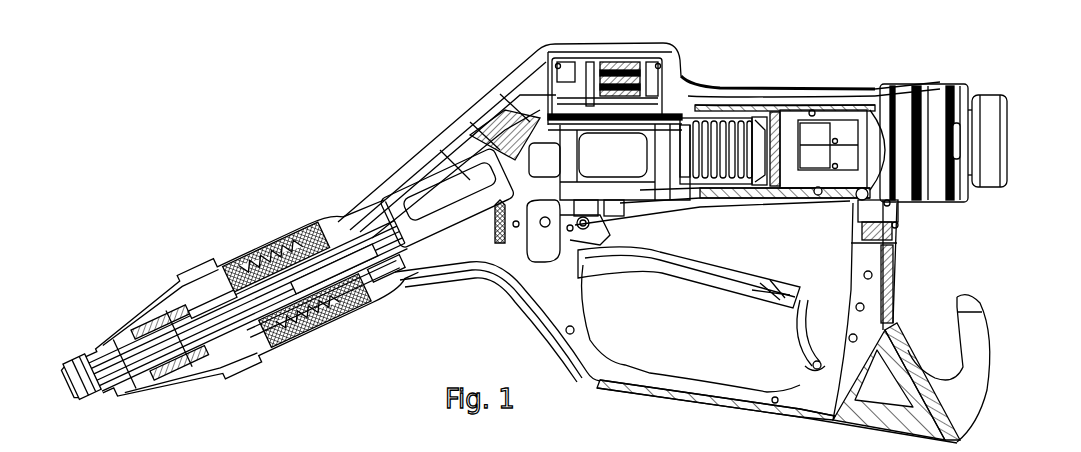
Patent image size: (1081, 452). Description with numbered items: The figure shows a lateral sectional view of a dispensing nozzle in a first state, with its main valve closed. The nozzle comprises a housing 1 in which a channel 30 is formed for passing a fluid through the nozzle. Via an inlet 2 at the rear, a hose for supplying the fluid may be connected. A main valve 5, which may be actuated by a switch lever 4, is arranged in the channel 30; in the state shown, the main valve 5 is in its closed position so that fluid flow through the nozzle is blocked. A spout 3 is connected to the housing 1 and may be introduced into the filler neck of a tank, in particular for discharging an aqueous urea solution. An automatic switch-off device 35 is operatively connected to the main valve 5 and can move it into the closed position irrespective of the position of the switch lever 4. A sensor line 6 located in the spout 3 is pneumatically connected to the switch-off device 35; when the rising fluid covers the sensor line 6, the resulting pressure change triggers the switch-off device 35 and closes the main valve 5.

The housing 1 is at (678, 92).
The inlet 2 is at (986, 142).
The spout 3 is at (345, 216).
The switch lever 4 is at (780, 283).
The main valve 5 is at (768, 145).
The sensor line 6 is at (365, 270).
The channel 30 is at (515, 165).
The automatic switch-off device 35 is at (580, 34).